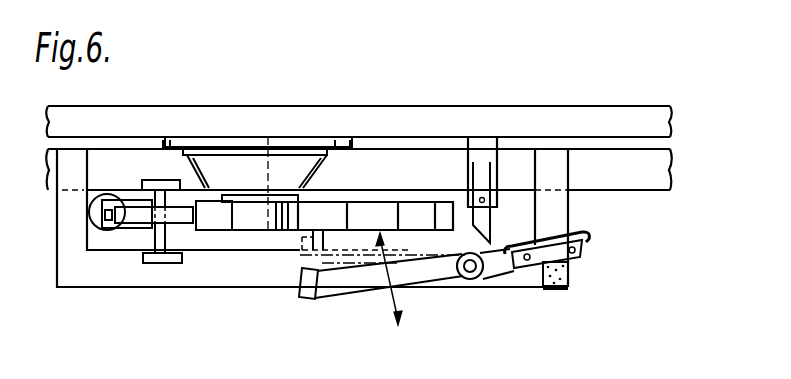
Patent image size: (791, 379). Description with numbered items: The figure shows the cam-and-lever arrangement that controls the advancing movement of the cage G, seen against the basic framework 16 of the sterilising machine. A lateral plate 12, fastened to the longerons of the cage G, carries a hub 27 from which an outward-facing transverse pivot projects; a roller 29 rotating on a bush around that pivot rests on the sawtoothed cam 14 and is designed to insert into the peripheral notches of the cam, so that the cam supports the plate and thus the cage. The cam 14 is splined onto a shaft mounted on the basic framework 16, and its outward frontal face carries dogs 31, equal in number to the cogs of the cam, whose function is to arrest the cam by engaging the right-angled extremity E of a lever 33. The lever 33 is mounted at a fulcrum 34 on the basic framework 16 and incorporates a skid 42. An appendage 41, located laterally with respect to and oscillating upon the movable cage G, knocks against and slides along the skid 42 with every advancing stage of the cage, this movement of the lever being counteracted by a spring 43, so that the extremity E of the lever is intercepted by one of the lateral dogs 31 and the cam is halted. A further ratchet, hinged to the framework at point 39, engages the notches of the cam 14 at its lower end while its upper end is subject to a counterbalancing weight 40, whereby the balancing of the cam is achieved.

The cage G is at (122, 101).
The lateral plate 12 is at (265, 140).
The hub 27 is at (313, 167).
The sawtoothed cam 14 is at (417, 207).
The appendage 41 is at (493, 223).
The skid 42 is at (553, 244).
The spring 43 is at (572, 276).
The basic framework 16 is at (527, 278).
The fulcrum 34 is at (471, 280).
The lever 33 is at (370, 278).
The dog 31 is at (322, 237).
The extremity of lever E is at (300, 290).
The roller 29 is at (248, 225).
The point 39 is at (160, 240).
The counterbalancing weight 40 is at (92, 222).